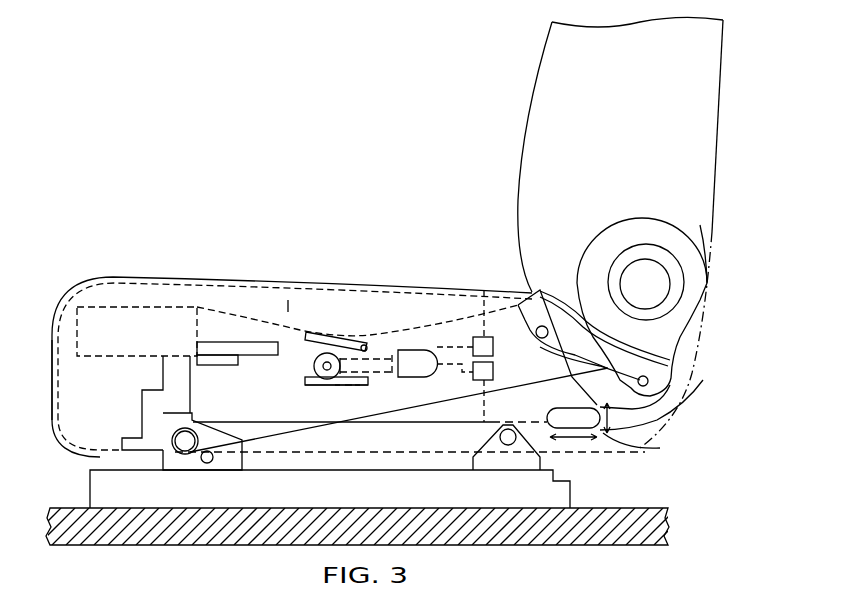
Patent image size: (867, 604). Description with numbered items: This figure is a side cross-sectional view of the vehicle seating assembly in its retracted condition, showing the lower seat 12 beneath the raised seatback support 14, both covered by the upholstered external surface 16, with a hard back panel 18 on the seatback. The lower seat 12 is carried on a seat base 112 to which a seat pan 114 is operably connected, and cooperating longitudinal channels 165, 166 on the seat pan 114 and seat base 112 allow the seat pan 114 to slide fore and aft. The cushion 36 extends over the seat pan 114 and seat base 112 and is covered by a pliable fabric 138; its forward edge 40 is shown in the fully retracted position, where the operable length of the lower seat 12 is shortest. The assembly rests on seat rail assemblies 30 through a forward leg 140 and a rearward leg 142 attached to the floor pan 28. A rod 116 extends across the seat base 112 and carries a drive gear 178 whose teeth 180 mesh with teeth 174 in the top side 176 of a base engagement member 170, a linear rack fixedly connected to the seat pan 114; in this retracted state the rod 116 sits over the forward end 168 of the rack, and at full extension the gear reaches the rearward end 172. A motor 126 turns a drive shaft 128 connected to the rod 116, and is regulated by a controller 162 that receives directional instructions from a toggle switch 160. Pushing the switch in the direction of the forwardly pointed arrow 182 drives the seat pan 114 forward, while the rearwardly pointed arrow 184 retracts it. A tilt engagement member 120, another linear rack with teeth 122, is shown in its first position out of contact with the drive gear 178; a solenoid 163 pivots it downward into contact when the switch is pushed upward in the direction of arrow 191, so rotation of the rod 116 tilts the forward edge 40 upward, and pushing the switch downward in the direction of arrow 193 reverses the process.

The lower seat 12 is at (640, 413).
The raised seatback support 14 is at (692, 173).
The upholstered external surface 16 is at (548, 58).
The hard back panel 18 is at (703, 223).
The floor pan 28 is at (75, 523).
The seat rail assemblies 30 is at (497, 476).
The cushion 36 is at (300, 332).
The forward edge 40 is at (52, 353).
The seat base 112 is at (508, 333).
The seat pan 114 is at (165, 316).
The rod 116 is at (333, 385).
The tilt engagement member 120 is at (339, 345).
The teeth 122 is at (372, 343).
The motor 126 is at (428, 360).
The drive shaft 128 is at (391, 363).
The pliable fabric 138 is at (137, 279).
The forward leg 140 is at (180, 465).
The rearward leg 142 is at (528, 470).
The toggle switch 160 is at (628, 452).
The controller 162 is at (486, 372).
The solenoid 163 is at (487, 338).
The longitudinal channel 165 is at (227, 343).
The longitudinal channel 166 is at (230, 366).
The forward end 168 is at (315, 382).
The base engagement member 170 is at (352, 385).
The rearward end 172 is at (368, 385).
The teeth 174 is at (305, 387).
The top side 176 is at (343, 385).
The drive gear 178 is at (323, 353).
The teeth 180 is at (288, 300).
The forwardly pointed arrow 182 is at (580, 437).
The rearwardly pointed arrow 184 is at (588, 437).
The arrow 191 is at (672, 400).
The arrow 193 is at (610, 427).